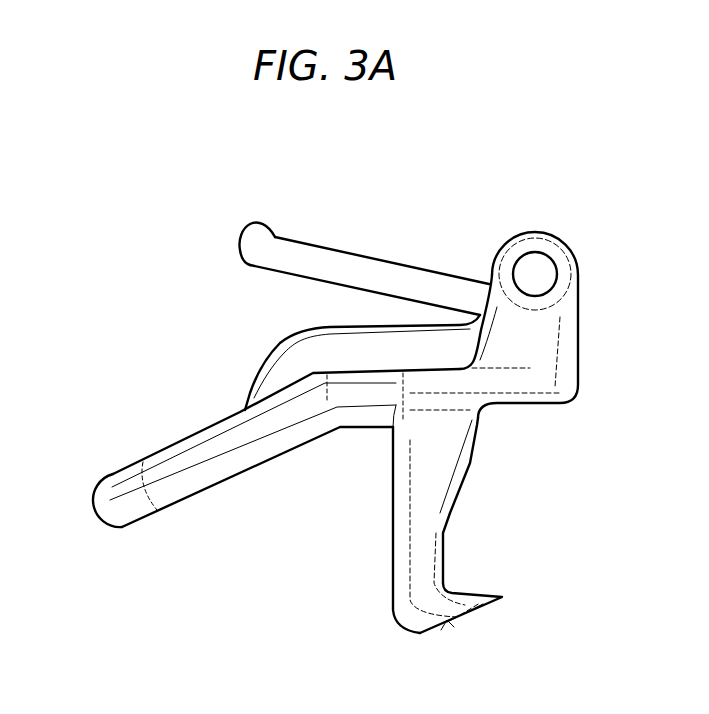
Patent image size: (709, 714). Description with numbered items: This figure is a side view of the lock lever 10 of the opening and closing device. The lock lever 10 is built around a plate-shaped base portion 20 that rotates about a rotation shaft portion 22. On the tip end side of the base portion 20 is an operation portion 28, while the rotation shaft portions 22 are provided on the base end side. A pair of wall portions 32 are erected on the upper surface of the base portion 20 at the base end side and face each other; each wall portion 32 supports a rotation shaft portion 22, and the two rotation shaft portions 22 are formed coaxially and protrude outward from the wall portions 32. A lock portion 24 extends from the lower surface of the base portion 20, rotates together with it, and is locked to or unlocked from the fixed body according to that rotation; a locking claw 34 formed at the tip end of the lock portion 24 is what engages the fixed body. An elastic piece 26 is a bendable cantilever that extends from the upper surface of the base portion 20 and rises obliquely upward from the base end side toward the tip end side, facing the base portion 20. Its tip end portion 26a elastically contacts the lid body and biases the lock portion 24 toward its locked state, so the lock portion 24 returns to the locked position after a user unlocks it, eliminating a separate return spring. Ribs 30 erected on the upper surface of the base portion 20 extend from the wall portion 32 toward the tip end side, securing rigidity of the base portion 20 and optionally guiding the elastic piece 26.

The lock lever 10 is at (420, 679).
The base portion 20 is at (283, 443).
The rotation shaft portion 22 is at (530, 268).
The lock portion 24 is at (428, 518).
The elastic piece 26 is at (370, 273).
The tip end portion 26a is at (255, 237).
The operation portion 28 is at (117, 510).
The rib 30 is at (297, 358).
The wall portion 32 is at (540, 343).
The locking claw 34 is at (490, 593).